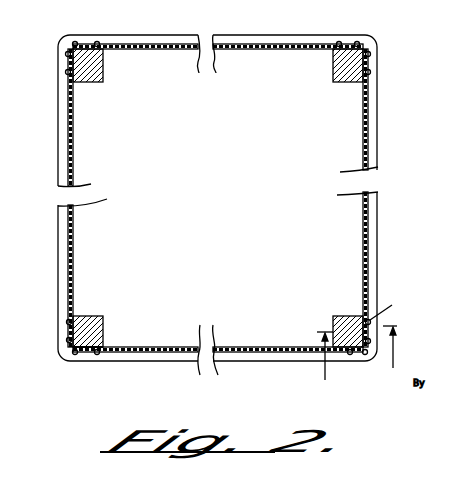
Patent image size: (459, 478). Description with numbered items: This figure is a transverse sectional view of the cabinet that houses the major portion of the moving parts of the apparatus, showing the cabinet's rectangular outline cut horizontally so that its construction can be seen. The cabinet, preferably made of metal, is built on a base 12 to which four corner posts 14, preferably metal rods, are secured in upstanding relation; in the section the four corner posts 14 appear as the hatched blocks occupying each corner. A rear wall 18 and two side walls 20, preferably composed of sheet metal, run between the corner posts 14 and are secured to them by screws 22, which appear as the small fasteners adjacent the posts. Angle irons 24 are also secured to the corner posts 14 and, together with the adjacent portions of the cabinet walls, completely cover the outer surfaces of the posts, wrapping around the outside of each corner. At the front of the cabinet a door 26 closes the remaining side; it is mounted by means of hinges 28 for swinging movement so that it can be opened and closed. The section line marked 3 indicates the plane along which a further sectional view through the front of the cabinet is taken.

The base 12 is at (372, 163).
The corner posts 14 is at (86, 49).
The rear wall 18 is at (157, 45).
The side walls 20 is at (68, 170).
The screws 22 is at (99, 43).
The angle irons 24 is at (73, 43).
The door 26 is at (232, 352).
The hinges 28 is at (91, 348).
The section line 3- 3 is at (358, 357).